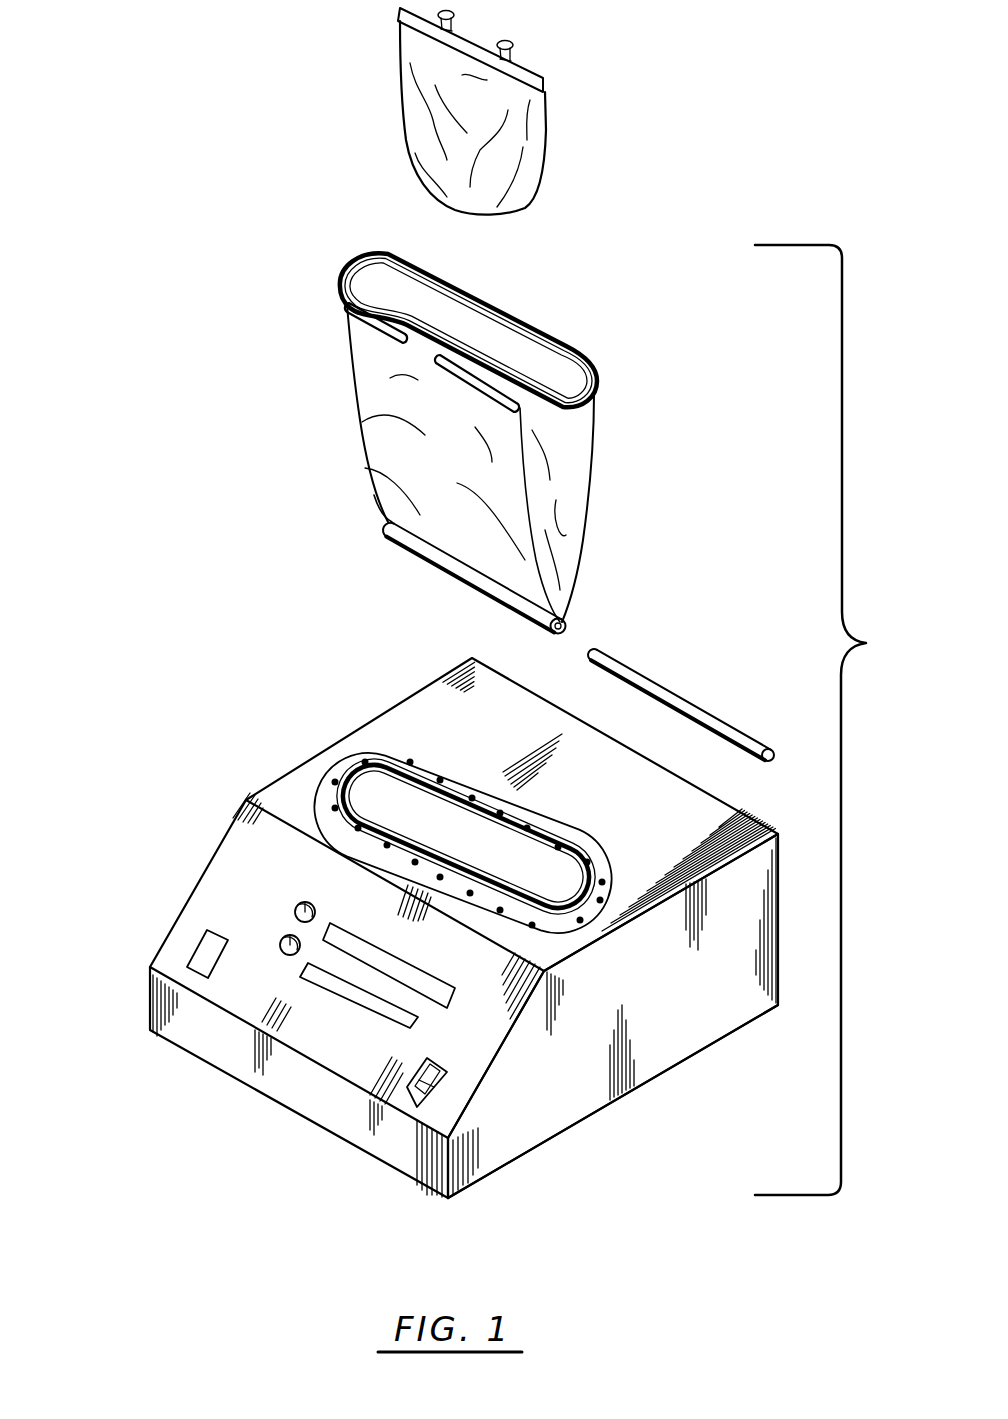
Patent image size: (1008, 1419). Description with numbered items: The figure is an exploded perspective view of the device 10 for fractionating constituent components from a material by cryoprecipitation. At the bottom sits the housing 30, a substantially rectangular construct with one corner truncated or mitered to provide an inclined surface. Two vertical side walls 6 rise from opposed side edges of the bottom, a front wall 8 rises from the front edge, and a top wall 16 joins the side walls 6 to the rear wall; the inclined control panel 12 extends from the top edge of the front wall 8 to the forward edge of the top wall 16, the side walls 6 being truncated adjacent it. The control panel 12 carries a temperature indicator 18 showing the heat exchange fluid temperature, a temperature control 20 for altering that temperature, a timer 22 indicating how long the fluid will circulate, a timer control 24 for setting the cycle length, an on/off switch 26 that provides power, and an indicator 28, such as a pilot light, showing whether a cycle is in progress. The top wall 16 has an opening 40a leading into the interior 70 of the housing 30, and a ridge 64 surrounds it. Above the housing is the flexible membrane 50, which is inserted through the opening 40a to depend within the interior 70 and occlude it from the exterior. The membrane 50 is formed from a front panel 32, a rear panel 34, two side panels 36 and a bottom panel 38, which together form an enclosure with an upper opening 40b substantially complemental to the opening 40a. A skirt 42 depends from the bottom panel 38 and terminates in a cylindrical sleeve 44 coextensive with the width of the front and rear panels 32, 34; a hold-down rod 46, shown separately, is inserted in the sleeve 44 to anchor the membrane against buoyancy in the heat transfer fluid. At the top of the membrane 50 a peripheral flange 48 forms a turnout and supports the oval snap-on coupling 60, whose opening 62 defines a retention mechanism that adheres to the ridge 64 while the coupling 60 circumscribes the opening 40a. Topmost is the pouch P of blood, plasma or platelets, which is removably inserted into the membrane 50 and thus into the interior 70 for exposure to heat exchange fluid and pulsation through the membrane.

The pouch P is at (549, 134).
The device 10 is at (830, 720).
The rear panel 34 is at (468, 312).
The snap-on coupling 60 is at (507, 305).
The upper opening 40b is at (449, 293).
The flexible membrane 50 is at (497, 449).
The front panel 32 is at (441, 466).
The side panels 36 is at (398, 305).
The bottom panel 38 is at (387, 515).
The skirt 42 is at (570, 616).
The peripheral flange 48 is at (380, 392).
The opening 62 is at (408, 340).
The sleeve 44 is at (517, 607).
The hold-down rod 46 is at (687, 702).
The housing 30 is at (424, 928).
The top wall 16 is at (665, 821).
The side walls 6 is at (742, 911).
The temperature indicator 18 is at (555, 1075).
The control panel 12 is at (331, 1031).
The front wall 8 is at (197, 1055).
The temperature control 20 is at (300, 907).
The timer control 24 is at (280, 938).
The indicator 28 is at (203, 947).
The timer 22 is at (385, 1007).
The on/off switch 26 is at (417, 1103).
The ridge 64 is at (317, 797).
The interior 70 is at (378, 792).
The opening 40a is at (427, 790).